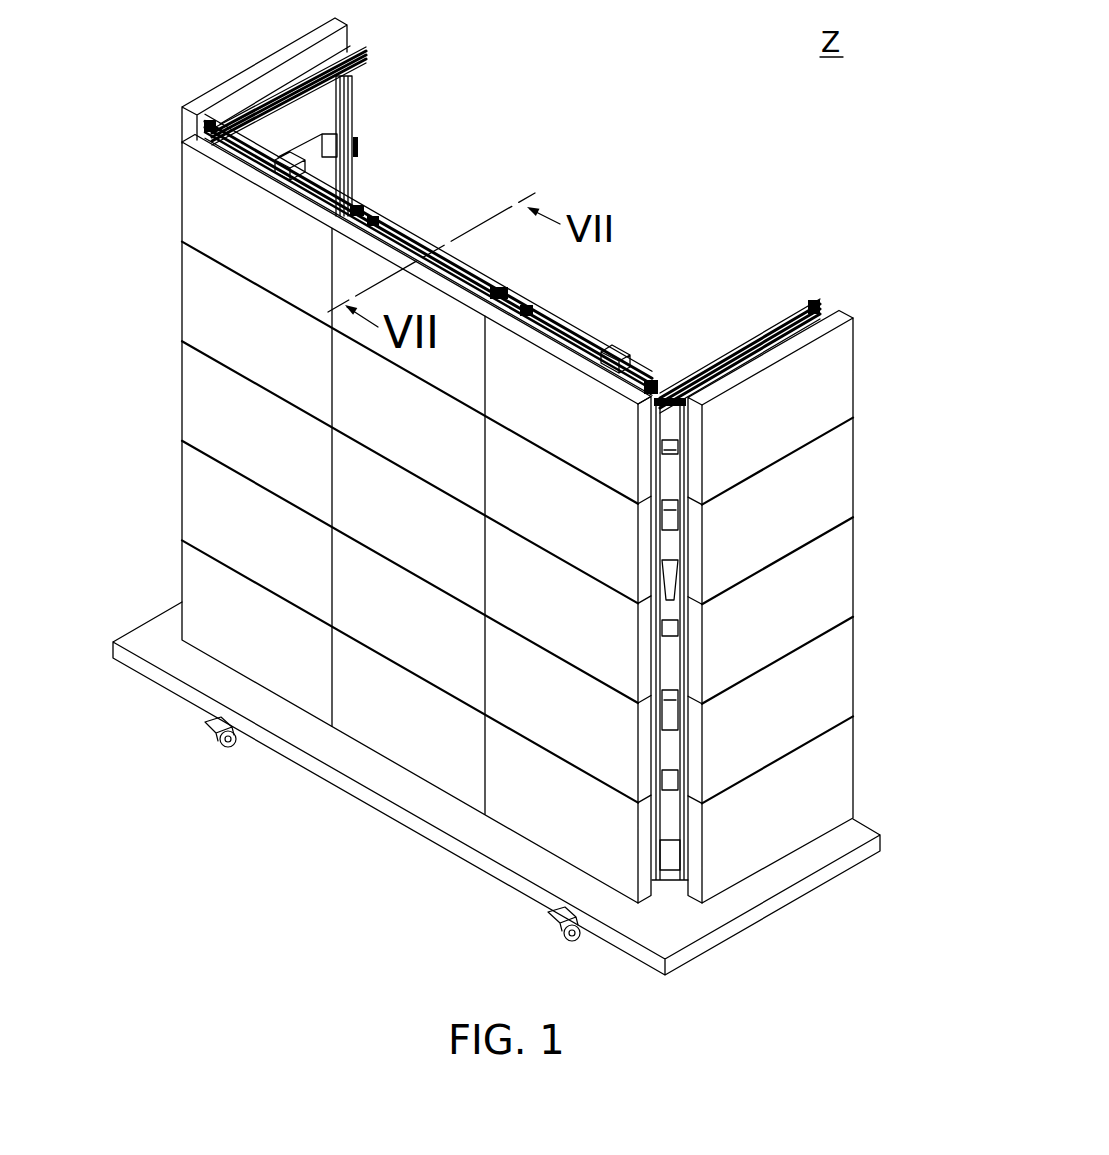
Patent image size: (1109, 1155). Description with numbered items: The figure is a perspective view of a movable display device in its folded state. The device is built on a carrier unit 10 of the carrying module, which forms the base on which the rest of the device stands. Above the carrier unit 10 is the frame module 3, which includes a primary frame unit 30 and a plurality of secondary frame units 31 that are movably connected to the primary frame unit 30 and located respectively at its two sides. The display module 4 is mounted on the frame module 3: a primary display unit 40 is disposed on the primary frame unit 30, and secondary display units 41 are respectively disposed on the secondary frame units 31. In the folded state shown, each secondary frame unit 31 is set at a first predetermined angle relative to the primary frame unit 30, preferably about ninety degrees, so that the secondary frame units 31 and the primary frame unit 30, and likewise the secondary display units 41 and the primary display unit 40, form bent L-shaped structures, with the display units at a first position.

The frame module 3 is at (512, 463).
The display module 4 is at (501, 460).
The carrier unit 10 is at (138, 629).
The primary frame unit 30 is at (320, 182).
The secondary frame unit 31 is at (415, 185).
The primary display unit 40 is at (185, 176).
The secondary display unit 41 is at (205, 95).